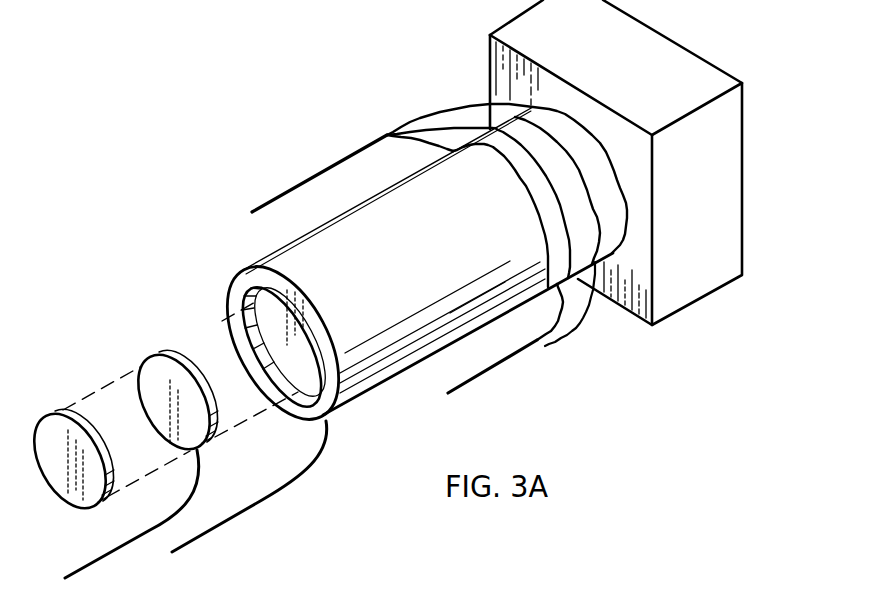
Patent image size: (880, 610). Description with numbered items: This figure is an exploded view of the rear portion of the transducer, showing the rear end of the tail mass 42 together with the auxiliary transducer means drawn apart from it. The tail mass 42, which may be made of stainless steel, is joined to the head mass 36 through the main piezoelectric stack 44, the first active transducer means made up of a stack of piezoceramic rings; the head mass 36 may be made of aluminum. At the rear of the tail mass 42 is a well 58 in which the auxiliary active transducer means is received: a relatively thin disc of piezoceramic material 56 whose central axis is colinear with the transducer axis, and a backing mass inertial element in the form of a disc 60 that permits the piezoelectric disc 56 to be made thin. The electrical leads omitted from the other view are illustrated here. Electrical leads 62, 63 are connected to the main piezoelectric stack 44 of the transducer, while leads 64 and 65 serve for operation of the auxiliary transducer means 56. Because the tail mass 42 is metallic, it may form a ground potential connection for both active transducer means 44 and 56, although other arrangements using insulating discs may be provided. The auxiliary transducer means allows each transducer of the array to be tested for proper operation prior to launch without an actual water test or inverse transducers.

The head mass 36 is at (662, 43).
The tail mass 42 is at (331, 236).
The first active transducer means 44 is at (583, 175).
The disc of piezoceramic material 56 is at (150, 382).
The well 58 is at (273, 340).
The disc 60 is at (53, 432).
The electrical lead 62 is at (325, 169).
The electrical lead 63 is at (525, 348).
The lead 64 is at (140, 536).
The lead 65 is at (230, 519).